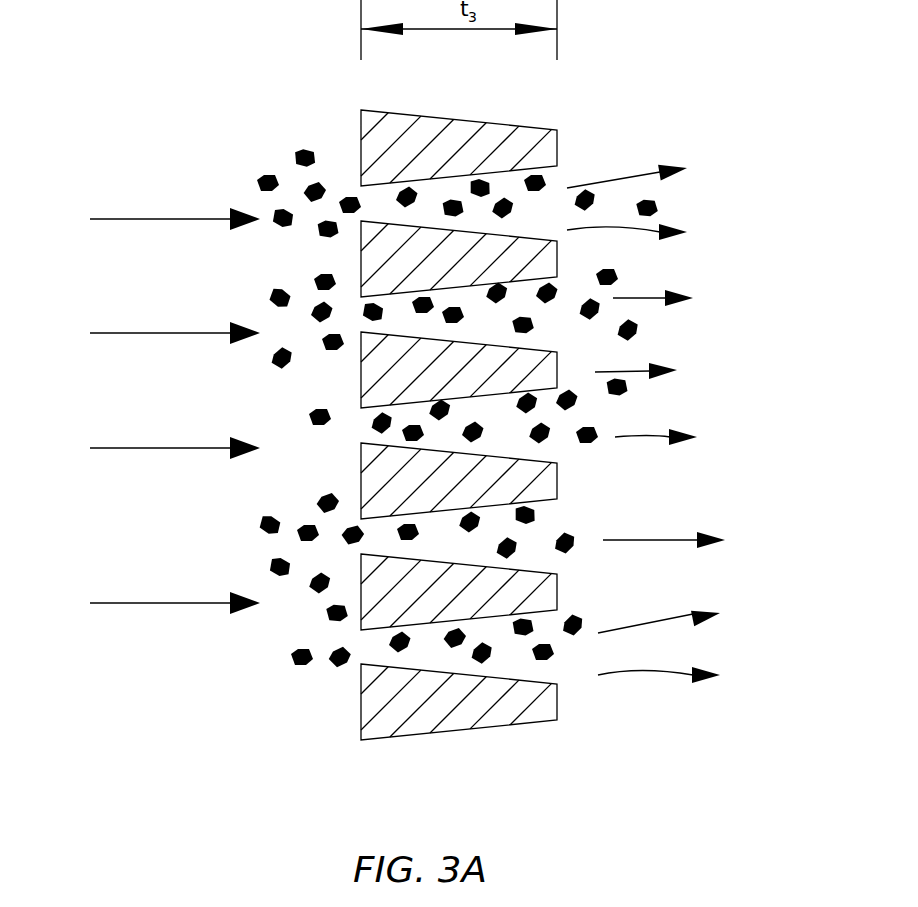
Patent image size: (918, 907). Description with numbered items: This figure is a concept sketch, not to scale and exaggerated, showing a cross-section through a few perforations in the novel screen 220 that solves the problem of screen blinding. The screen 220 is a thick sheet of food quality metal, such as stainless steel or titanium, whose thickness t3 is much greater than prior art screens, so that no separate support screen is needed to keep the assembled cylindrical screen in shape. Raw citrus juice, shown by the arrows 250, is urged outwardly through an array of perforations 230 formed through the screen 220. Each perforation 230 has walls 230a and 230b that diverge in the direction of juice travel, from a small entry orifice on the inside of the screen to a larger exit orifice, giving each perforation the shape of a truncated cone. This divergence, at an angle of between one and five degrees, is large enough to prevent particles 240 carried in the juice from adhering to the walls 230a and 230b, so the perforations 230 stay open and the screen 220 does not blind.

The screen 220 is at (412, 222).
The perforation 230 is at (377, 665).
The wall of perforation 230a is at (555, 499).
The wall of perforation 230b is at (552, 568).
The particles 240 is at (307, 188).
The arrow indicating raw citrus juice flow 250 is at (163, 386).